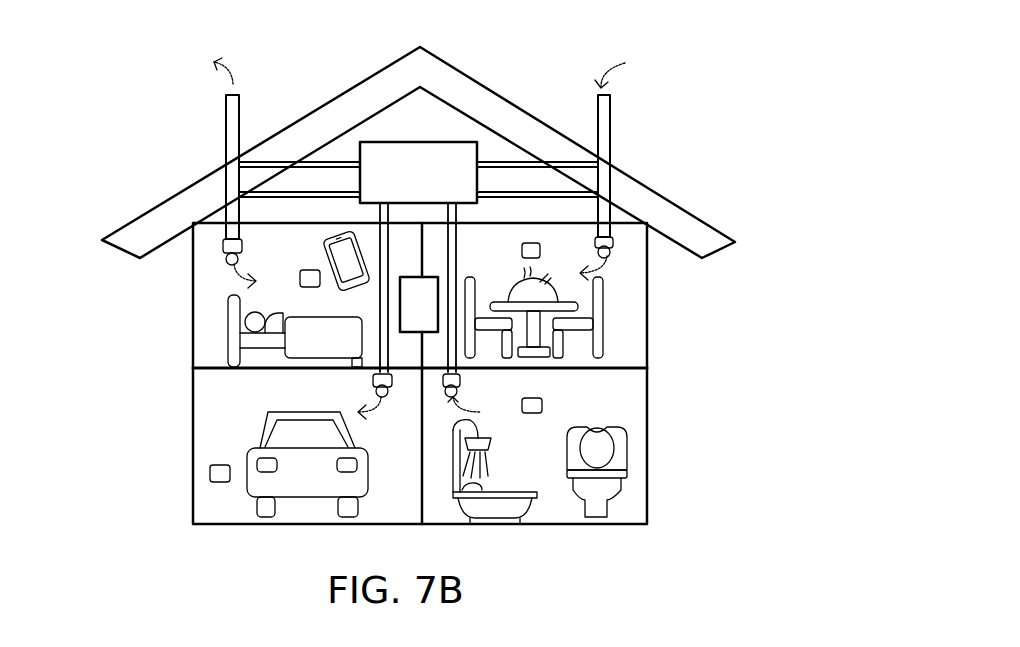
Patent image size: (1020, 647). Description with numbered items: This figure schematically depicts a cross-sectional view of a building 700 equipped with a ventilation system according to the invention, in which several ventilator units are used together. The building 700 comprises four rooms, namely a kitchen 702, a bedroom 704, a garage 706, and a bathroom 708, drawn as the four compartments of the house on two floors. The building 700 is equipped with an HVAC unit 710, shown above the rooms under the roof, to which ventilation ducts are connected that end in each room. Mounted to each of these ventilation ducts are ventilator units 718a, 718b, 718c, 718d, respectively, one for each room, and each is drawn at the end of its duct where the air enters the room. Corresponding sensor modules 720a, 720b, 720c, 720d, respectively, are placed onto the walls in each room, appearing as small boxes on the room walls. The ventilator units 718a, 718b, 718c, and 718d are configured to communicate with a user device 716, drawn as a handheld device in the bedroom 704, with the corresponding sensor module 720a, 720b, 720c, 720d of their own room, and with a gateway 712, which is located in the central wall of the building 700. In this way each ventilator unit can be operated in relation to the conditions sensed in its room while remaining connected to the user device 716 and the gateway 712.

The building 700 is at (676, 68).
The kitchen 702 is at (633, 315).
The bedroom 704 is at (210, 335).
The garage 706 is at (202, 440).
The bathroom 708 is at (620, 393).
The HVAC unit 710 is at (396, 157).
The gateway 712 is at (431, 290).
The user device 716 is at (345, 262).
The ventilator unit 718a is at (614, 241).
The ventilator unit 718b is at (232, 246).
The ventilator unit 718c is at (372, 380).
The ventilator unit 718d is at (461, 386).
The sensor module 720a is at (541, 248).
The sensor module 720b is at (300, 279).
The sensor module 720c is at (210, 477).
The sensor module 720d is at (662, 411).